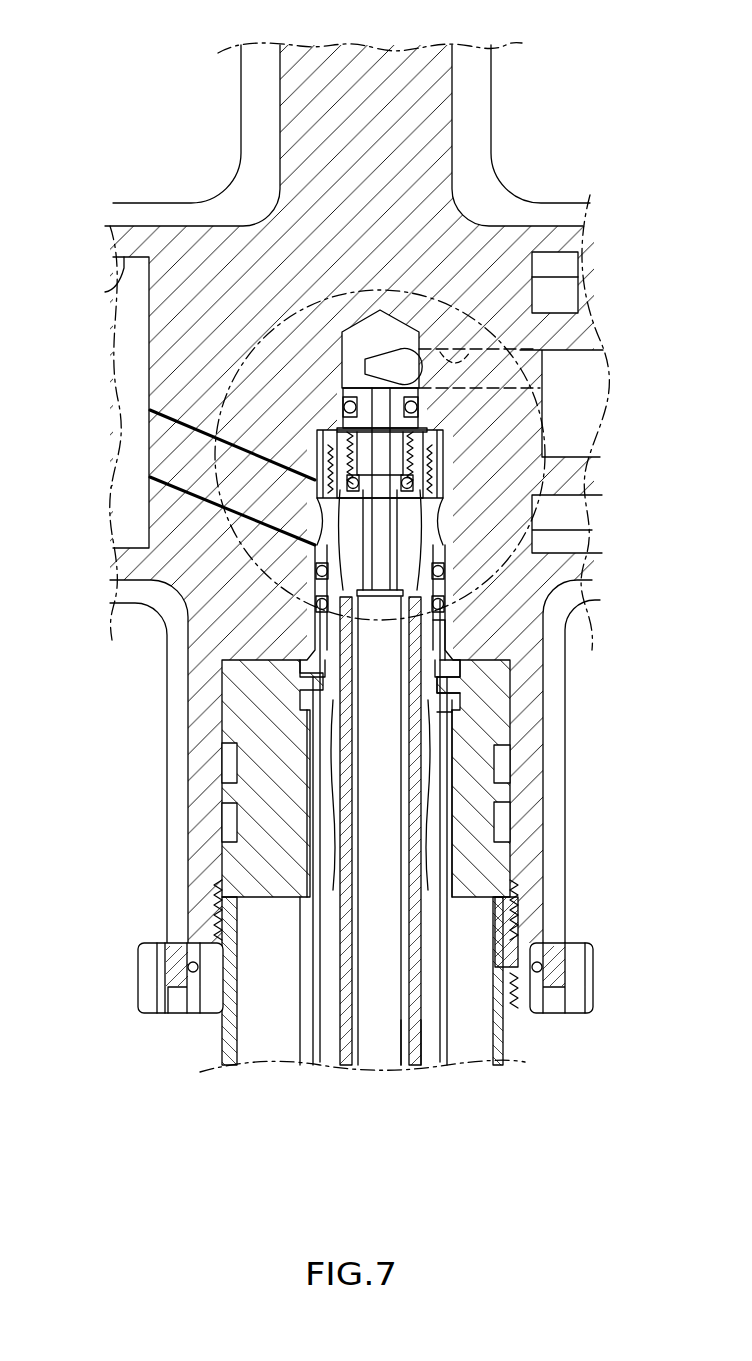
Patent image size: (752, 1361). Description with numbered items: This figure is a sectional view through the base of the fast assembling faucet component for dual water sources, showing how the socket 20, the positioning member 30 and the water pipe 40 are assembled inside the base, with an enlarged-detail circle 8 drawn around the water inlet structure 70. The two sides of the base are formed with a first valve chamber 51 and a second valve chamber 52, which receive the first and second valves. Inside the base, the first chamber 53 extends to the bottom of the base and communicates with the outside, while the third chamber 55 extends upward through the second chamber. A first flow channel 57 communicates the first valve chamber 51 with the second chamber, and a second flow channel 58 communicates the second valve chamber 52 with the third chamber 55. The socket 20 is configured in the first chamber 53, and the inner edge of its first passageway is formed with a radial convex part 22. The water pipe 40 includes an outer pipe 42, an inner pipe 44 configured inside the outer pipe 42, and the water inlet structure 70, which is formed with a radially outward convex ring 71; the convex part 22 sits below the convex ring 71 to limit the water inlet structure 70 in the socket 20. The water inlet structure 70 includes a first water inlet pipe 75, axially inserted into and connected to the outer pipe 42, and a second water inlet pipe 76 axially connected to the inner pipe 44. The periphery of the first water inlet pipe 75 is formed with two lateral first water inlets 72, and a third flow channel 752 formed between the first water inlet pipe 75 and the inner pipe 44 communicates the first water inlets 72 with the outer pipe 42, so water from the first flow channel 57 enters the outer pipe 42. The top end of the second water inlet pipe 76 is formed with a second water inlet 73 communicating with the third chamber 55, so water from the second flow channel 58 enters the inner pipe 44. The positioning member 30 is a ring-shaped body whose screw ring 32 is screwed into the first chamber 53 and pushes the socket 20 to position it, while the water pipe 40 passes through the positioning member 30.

The enlarged view circle 8 is at (264, 336).
The first valve chamber 51 is at (112, 291).
The second valve chamber 52 is at (565, 352).
The first chamber 53 is at (237, 820).
The third chamber 55 is at (385, 326).
The first flow channel 57 is at (150, 410).
The second flow channel 58 is at (415, 368).
The first water inlet 72 is at (322, 525).
The second water inlet 73 is at (345, 407).
The second water inlet pipe 76 is at (392, 520).
The water inlet structure 70 is at (458, 587).
The first water inlet pipe 75 is at (438, 637).
The third flow channel 752 is at (460, 661).
The convex ring 71 is at (460, 681).
The convex part 22 is at (452, 712).
The socket 20 is at (270, 897).
The screw ring 32 is at (220, 912).
The positioning member 30 is at (197, 983).
The water pipe 40 is at (460, 933).
The outer pipe 42 is at (440, 963).
The inner pipe 44 is at (405, 1040).